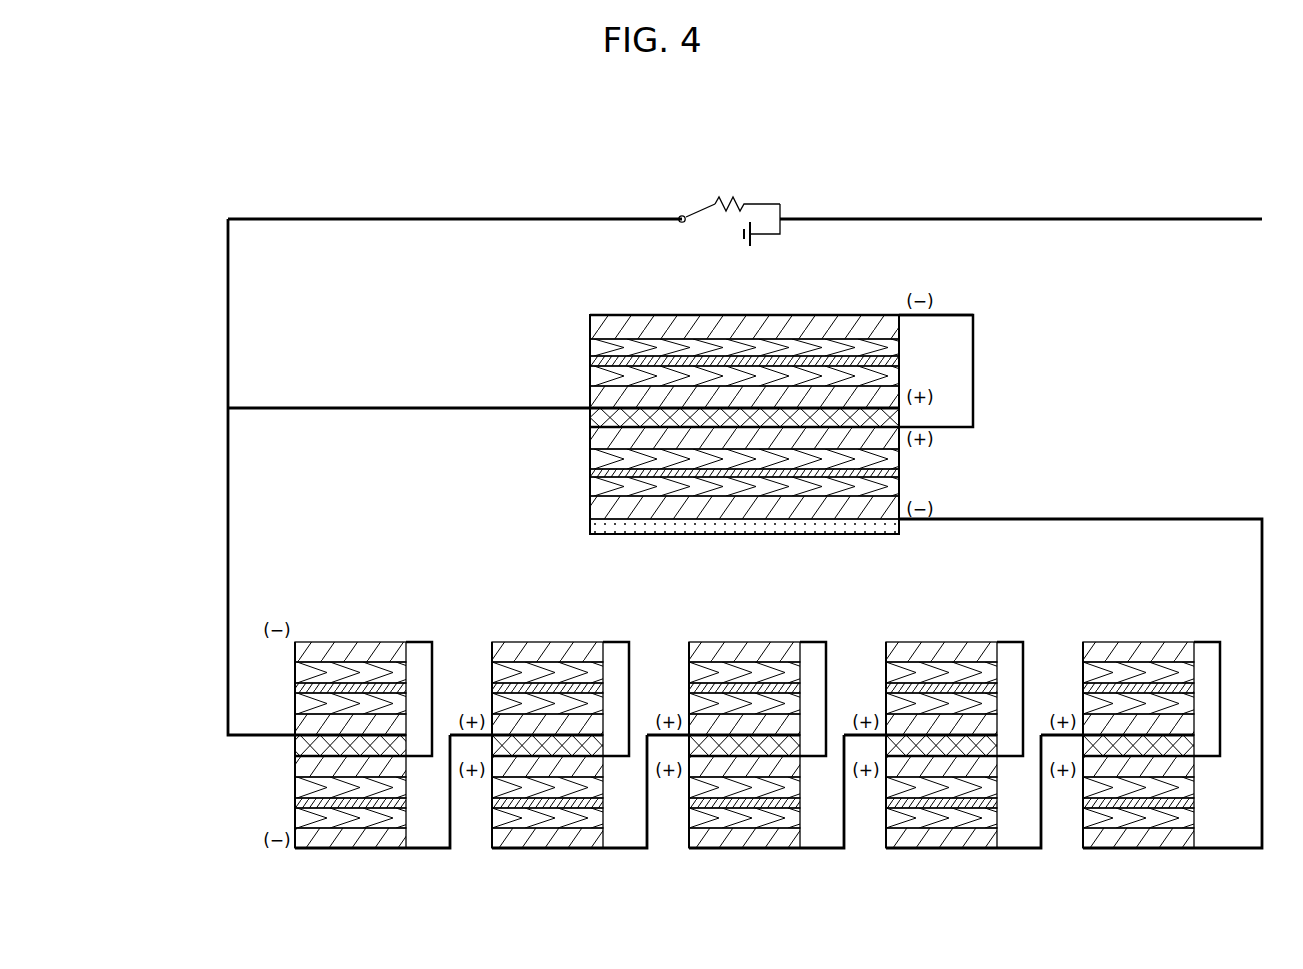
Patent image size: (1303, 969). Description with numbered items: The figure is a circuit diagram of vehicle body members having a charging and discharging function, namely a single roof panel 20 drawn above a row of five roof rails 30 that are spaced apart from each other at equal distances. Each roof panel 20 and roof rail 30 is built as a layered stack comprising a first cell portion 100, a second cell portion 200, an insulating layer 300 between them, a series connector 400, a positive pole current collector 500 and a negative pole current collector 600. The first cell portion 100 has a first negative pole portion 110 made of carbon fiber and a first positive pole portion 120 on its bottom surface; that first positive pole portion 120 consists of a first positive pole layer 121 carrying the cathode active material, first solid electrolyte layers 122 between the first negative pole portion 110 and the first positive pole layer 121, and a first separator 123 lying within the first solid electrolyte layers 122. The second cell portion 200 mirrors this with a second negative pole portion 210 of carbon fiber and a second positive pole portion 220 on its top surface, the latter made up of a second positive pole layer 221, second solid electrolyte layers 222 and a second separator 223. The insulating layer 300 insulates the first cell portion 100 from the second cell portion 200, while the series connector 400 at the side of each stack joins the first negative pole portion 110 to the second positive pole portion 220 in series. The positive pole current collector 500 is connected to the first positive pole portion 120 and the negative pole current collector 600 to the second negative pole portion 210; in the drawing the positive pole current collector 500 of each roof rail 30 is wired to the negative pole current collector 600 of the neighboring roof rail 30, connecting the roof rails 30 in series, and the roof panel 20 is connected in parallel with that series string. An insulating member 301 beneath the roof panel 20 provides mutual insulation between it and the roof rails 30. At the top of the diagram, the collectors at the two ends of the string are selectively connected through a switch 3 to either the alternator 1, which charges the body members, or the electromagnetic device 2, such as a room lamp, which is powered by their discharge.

The alternator 1 is at (752, 247).
The electromagnetic device 2 is at (738, 200).
The switch 3 is at (682, 215).
The roof panel 20 is at (898, 302).
The roof rail 30 is at (340, 634).
The first cell portion 100 is at (522, 509).
The first negative pole portion 110 is at (590, 327).
The first positive pole portion 120 is at (679, 359).
The first positive pole layer 121 is at (707, 387).
The first solid electrolyte layers 122 is at (590, 347).
The first separator 123 is at (590, 361).
The second cell portion 200 is at (522, 637).
The second negative pole portion 210 is at (590, 507).
The second positive pole portion 220 is at (679, 476).
The second positive pole layer 221 is at (590, 438).
The second solid electrolyte layers 222 is at (590, 459).
The second separator 223 is at (590, 473).
The insulating layer 300 is at (590, 417).
The insulating member 301 is at (901, 527).
The series connector 400 is at (973, 372).
The positive pole current collector 500 is at (312, 408).
The negative pole current collector 600 is at (1113, 519).